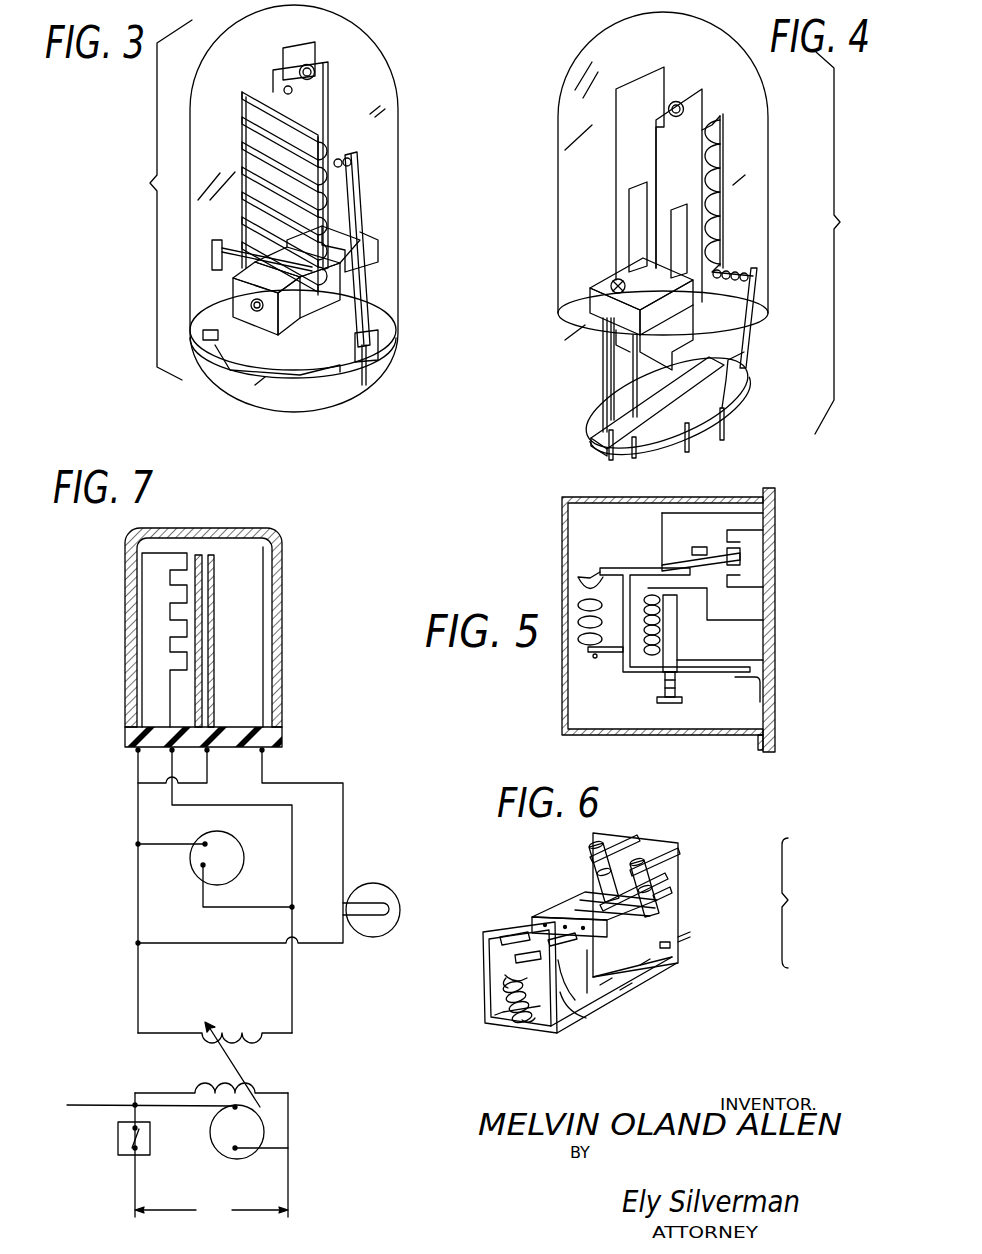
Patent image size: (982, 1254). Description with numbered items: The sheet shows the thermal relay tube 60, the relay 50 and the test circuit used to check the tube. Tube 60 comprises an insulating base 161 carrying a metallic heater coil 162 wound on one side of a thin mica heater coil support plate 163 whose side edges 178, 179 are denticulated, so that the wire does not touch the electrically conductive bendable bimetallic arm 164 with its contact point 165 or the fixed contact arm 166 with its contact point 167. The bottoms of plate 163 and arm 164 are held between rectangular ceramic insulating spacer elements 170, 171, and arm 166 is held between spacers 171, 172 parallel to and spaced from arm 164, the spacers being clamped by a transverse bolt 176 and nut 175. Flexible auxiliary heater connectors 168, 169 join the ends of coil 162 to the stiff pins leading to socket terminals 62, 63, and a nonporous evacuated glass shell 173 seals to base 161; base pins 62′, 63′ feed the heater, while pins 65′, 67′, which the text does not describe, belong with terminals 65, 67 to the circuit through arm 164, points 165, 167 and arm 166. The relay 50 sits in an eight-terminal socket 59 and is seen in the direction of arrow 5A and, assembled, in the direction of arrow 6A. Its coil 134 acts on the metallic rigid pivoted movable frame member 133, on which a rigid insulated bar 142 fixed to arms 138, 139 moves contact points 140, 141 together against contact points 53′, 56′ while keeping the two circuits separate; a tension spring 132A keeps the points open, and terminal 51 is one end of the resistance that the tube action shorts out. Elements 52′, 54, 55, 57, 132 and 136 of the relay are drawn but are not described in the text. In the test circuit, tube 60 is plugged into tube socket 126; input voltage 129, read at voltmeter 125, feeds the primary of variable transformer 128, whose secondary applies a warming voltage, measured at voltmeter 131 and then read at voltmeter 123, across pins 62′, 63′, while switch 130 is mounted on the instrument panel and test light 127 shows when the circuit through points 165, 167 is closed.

In FIG. 6, the relay 50 is at (802, 903).
In FIG. 5, the terminal 51 is at (764, 513).
In FIG. 6, the terminal 51 is at (685, 937).
In FIG. 5, the coil lead 52′ is at (764, 620).
In FIG. 5, the contact point 53′ is at (764, 584).
In FIG. 6, the contact point 53′ is at (655, 900).
In FIG. 5, the contact 54 is at (764, 532).
In FIG. 6, the contact 54 is at (665, 857).
In FIG. 6, the contact strip 55 is at (628, 843).
In FIG. 6, the contact point 56′ is at (600, 900).
In FIG. 5, the lead 57 is at (764, 660).
In FIG. 5, the socket 59 is at (770, 753).
In FIG. 6, the arrow 5A is at (643, 1008).
In FIG. 5, the arrow 6A is at (555, 555).
In FIG. 3, the thermal relay tube 60 is at (150, 187).
In FIG. 4, the thermal relay tube 60 is at (843, 243).
In FIG. 7, the thermal relay tube 60 is at (288, 705).
In FIG. 7, the socket terminal 62 is at (171, 753).
In FIG. 3, the base pin 62′ is at (380, 337).
In FIG. 4, the base pin 62′ is at (609, 354).
In FIG. 7, the socket terminal 63 is at (136, 750).
In FIG. 4, the base pin 63′ is at (746, 352).
In FIG. 4, the terminal 65 is at (601, 410).
In FIG. 7, the terminal 65 is at (264, 753).
In FIG. 4, the lead pin 65′ is at (637, 454).
In FIG. 4, the terminal 67 is at (631, 383).
In FIG. 7, the terminal 67 is at (208, 753).
In FIG. 4, the lead pin 67′ is at (690, 449).
In FIG. 7, the voltmeter 123 is at (238, 862).
In FIG. 7, the voltmeter 125 is at (243, 1152).
In FIG. 7, the tube socket 126 is at (284, 739).
In FIG. 7, the test light 127 is at (352, 890).
In FIG. 5, the test light 127 is at (668, 672).
In FIG. 7, the variable transformer 128 is at (250, 1033).
In FIG. 7, the input voltage 129 is at (211, 1210).
In FIG. 7, the switch 130 is at (122, 1150).
In FIG. 5, the voltmeter 131 is at (663, 737).
In FIG. 6, the voltmeter 131 is at (580, 977).
In FIG. 5, the bracket 132 is at (642, 672).
In FIG. 6, the bracket 132 is at (538, 1003).
In FIG. 5, the tension spring 132A is at (600, 615).
In FIG. 6, the tension spring 132A is at (505, 998).
In FIG. 5, the frame member 133 is at (648, 568).
In FIG. 6, the frame member 133 is at (510, 961).
In FIG. 5, the coil 134 is at (647, 598).
In FIG. 6, the coil 134 is at (572, 980).
In FIG. 5, the adjusting screw 136 is at (673, 698).
In FIG. 6, the arm 138 is at (607, 920).
In FIG. 6, the arm 139 is at (563, 910).
In FIG. 5, the contact point 140 is at (741, 556).
In FIG. 6, the contact point 140 is at (667, 872).
In FIG. 6, the contact point 141 is at (594, 876).
In FIG. 5, the insulated bar 142 is at (700, 547).
In FIG. 6, the insulated bar 142 is at (668, 946).
In FIG. 3, the base 161 is at (382, 357).
In FIG. 4, the base 161 is at (744, 410).
In FIG. 3, the heater coil 162 is at (243, 138).
In FIG. 4, the heater coil 162 is at (721, 165).
In FIG. 7, the heater coil 162 is at (172, 600).
In FIG. 3, the heater coil support plate 163 is at (256, 100).
In FIG. 4, the heater coil support plate 163 is at (714, 121).
In FIG. 7, the heater coil support plate 163 is at (197, 557).
In FIG. 3, the bimetallic arm 164 is at (289, 63).
In FIG. 4, the bimetallic arm 164 is at (695, 109).
In FIG. 7, the bimetallic arm 164 is at (212, 642).
In FIG. 3, the contact point 165 is at (311, 70).
In FIG. 4, the contact point 165 is at (679, 103).
In FIG. 7, the contact point 165 is at (228, 546).
In FIG. 3, the fixed contact arm 166 is at (322, 98).
In FIG. 4, the fixed contact arm 166 is at (627, 176).
In FIG. 3, the contact point 167 is at (315, 71).
In FIG. 7, the contact point 167 is at (246, 546).
In FIG. 3, the auxiliary heater connector 168 is at (354, 201).
In FIG. 7, the auxiliary heater connector 168 is at (173, 697).
In FIG. 4, the auxiliary heater connector 169 is at (754, 272).
In FIG. 7, the auxiliary heater connector 169 is at (147, 580).
In FIG. 3, the ceramic insulating spacer element 170 is at (297, 320).
In FIG. 4, the ceramic insulating spacer element 170 is at (726, 324).
In FIG. 4, the ceramic insulating spacer element 171 is at (740, 382).
In FIG. 3, the ceramic insulating spacer element 172 is at (340, 262).
In FIG. 4, the ceramic insulating spacer element 172 is at (596, 299).
In FIG. 3, the shell 173 is at (397, 178).
In FIG. 4, the shell 173 is at (558, 103).
In FIG. 7, the shell 173 is at (283, 582).
In FIG. 3, the nut 175 is at (250, 301).
In FIG. 4, the transverse bolt 176 is at (612, 281).
In FIG. 3, the side edge 178 is at (250, 103).
In FIG. 4, the side edge 178 is at (719, 145).
In FIG. 3, the side edge 179 is at (320, 140).